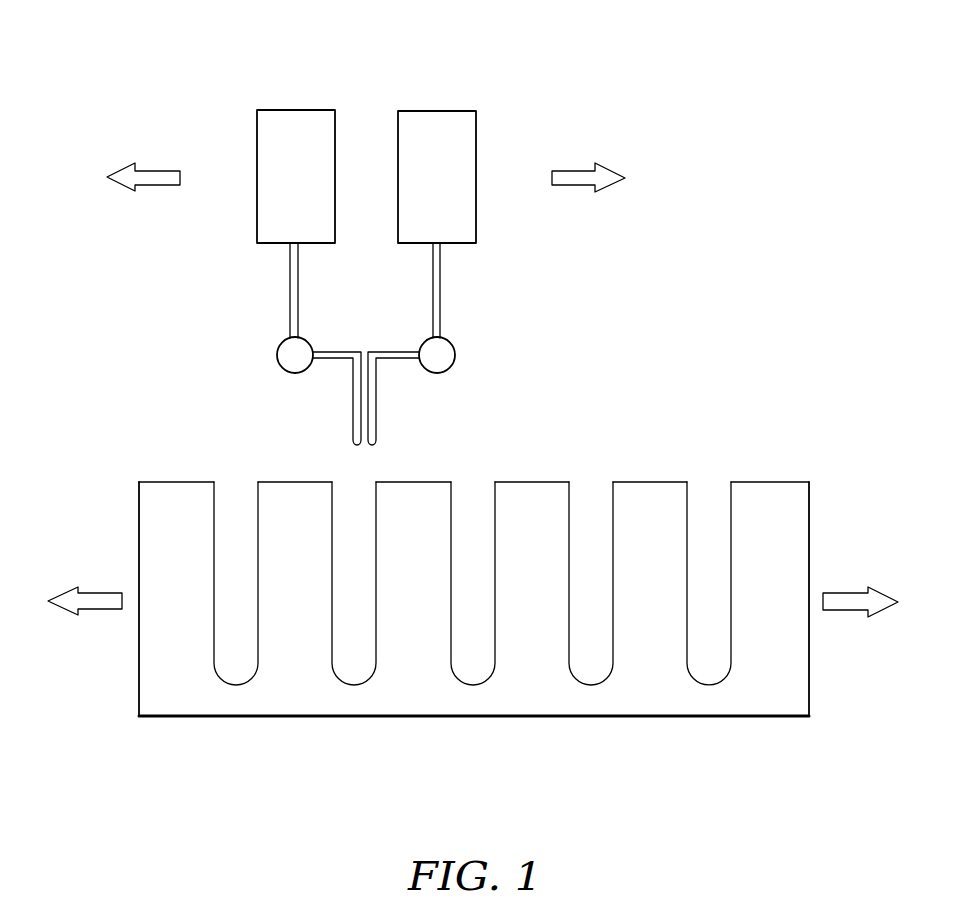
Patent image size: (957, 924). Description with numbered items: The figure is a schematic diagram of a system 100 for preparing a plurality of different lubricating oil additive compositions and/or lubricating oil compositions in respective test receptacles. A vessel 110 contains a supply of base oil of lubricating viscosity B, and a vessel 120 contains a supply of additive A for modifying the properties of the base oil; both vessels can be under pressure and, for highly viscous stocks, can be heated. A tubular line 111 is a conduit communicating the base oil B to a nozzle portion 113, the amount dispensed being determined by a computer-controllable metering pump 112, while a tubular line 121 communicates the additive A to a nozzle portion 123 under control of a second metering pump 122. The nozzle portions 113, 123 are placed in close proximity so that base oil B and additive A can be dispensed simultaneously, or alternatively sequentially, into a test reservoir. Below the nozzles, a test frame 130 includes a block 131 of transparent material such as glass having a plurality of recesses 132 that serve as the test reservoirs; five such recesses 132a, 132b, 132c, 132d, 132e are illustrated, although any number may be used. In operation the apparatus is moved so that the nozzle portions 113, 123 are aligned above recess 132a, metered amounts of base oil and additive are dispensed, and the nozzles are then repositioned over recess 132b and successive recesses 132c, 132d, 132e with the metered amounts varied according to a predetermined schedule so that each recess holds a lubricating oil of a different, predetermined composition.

The system 100 is at (473, 422).
The vessel 110 is at (278, 110).
The vessel 120 is at (476, 140).
The tubular line 111 is at (290, 318).
The tubular line 121 is at (440, 322).
The metering pump 112 is at (278, 360).
The metering pump 122 is at (455, 352).
The nozzle portion 113 is at (353, 402).
The nozzle portion 123 is at (378, 390).
The test frame 130 is at (473, 636).
The block 131 is at (537, 700).
The recesses 132 is at (472, 612).
The recess 132a is at (237, 497).
The recess 132b is at (353, 497).
The recess 132c is at (473, 497).
The recess 132d is at (591, 497).
The recess 132e is at (710, 497).